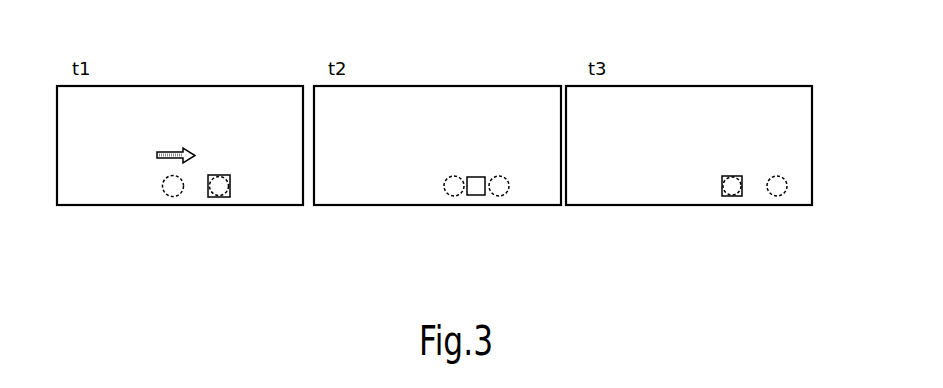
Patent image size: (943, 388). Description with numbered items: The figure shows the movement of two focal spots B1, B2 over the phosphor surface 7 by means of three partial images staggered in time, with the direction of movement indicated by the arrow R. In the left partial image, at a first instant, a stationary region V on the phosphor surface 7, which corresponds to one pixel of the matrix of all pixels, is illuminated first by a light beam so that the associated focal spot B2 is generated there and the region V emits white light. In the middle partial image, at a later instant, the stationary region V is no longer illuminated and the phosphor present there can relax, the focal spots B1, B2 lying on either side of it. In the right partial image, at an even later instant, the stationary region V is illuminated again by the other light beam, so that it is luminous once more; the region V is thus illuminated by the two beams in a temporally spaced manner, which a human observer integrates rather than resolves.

The phosphor surface 7 is at (264, 102).
The direction of movement R is at (168, 150).
The stationary region V is at (230, 187).
The focal spot B1 is at (172, 196).
The focal spot B2 is at (218, 176).